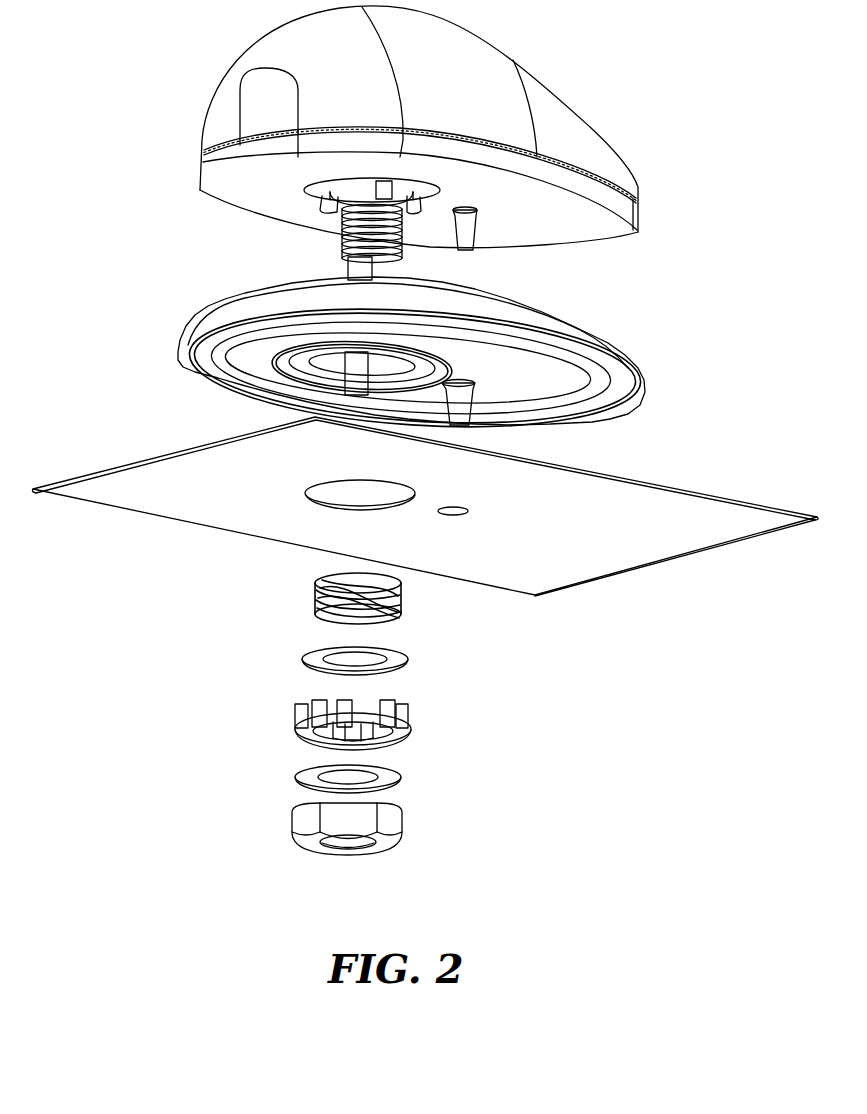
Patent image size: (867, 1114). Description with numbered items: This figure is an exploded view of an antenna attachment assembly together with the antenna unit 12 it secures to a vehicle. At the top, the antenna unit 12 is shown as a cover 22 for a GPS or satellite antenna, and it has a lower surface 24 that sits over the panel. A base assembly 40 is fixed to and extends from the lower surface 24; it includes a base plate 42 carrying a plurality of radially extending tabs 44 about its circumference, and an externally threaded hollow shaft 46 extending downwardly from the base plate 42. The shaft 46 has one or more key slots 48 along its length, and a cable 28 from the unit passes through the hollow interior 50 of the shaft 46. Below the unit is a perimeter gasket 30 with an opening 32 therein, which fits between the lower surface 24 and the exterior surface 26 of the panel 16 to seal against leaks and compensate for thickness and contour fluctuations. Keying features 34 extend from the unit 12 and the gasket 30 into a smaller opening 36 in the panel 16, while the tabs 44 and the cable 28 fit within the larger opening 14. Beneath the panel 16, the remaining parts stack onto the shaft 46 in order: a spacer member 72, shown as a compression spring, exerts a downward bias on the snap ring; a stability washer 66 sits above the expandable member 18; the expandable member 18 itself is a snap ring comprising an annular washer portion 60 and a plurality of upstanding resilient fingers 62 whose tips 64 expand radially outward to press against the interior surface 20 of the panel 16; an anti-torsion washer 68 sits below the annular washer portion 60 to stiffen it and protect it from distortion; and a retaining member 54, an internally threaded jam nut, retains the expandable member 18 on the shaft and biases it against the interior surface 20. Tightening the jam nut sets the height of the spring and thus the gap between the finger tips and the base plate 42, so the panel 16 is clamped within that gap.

The antenna unit 12 is at (600, 143).
The cover 22 is at (553, 100).
The lower surface 24 is at (607, 237).
The base assembly 40 is at (295, 228).
The base plate 42 is at (357, 188).
The radially extending tabs 44 is at (387, 180).
The externally threaded hollow shaft 46 is at (425, 215).
The key slots 48 is at (342, 240).
The hollow interior 50 is at (380, 268).
The keying features 34 is at (477, 235).
The perimeter gasket 30 is at (623, 374).
The cable 28 is at (347, 281).
The opening 32 is at (287, 393).
The interior surface 20 is at (622, 548).
The exterior surface 26 is at (703, 490).
The panel 16 is at (700, 528).
The opening 14 is at (333, 493).
The smaller opening 36 is at (453, 514).
The spacer member 72 is at (317, 606).
The stability washer 66 is at (406, 655).
The annular washer portion 60 is at (320, 733).
The expandable member 18 is at (415, 732).
The fingers 62 is at (318, 700).
The tips 64 is at (345, 698).
The anti-torsion washer 68 is at (402, 780).
The retaining member 54 is at (405, 828).